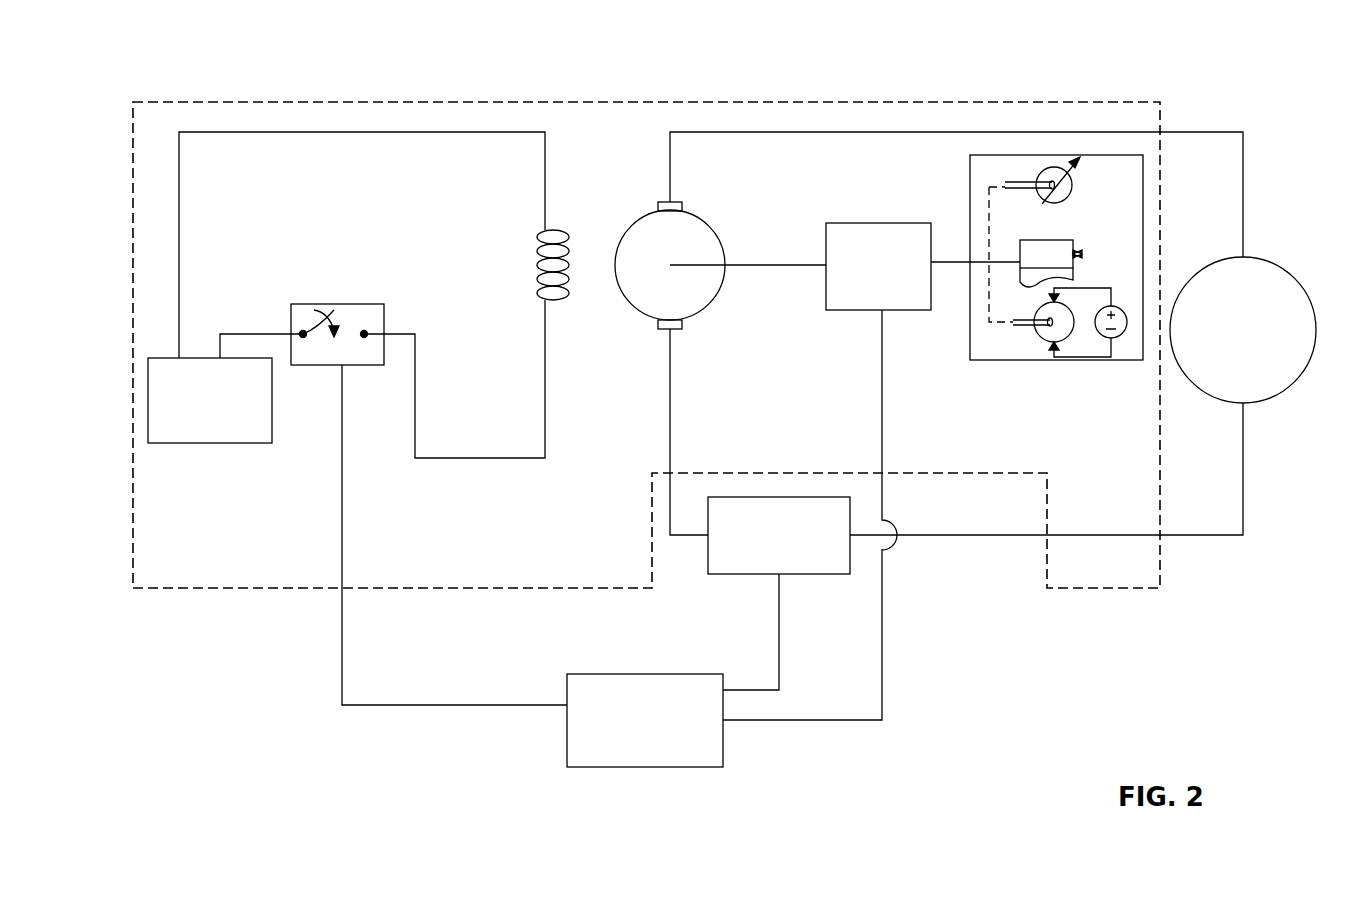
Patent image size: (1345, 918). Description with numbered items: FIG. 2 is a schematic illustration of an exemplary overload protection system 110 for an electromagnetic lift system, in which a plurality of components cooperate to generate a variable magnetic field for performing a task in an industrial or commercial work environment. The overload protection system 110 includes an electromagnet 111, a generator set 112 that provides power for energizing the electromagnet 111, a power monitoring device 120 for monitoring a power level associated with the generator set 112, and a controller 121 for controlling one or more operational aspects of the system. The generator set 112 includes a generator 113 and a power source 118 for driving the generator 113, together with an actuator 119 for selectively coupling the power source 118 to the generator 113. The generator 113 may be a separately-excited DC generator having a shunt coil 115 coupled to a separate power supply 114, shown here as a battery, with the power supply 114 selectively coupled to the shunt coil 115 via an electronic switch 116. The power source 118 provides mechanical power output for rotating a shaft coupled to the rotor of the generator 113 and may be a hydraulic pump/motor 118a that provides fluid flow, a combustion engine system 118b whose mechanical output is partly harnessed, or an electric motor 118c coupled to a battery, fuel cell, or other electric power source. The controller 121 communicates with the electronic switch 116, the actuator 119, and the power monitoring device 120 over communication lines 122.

The overload protection system 110 is at (943, 79).
The electromagnet 111 is at (1222, 403).
The generator set 112 is at (662, 101).
The generator 113 is at (702, 213).
The power supply 114 is at (206, 444).
The shunt coil 115 is at (562, 233).
The electronic switch 116 is at (340, 303).
The power source 118 is at (1056, 285).
The hydraulic pump/motor 118a is at (1072, 180).
The combustion engine system 118b is at (1052, 240).
The electric motor 118c is at (1086, 304).
The actuator 119 is at (898, 223).
The power monitoring device 120 is at (830, 575).
The controller 121 is at (647, 768).
The communication lines 122 is at (340, 630).